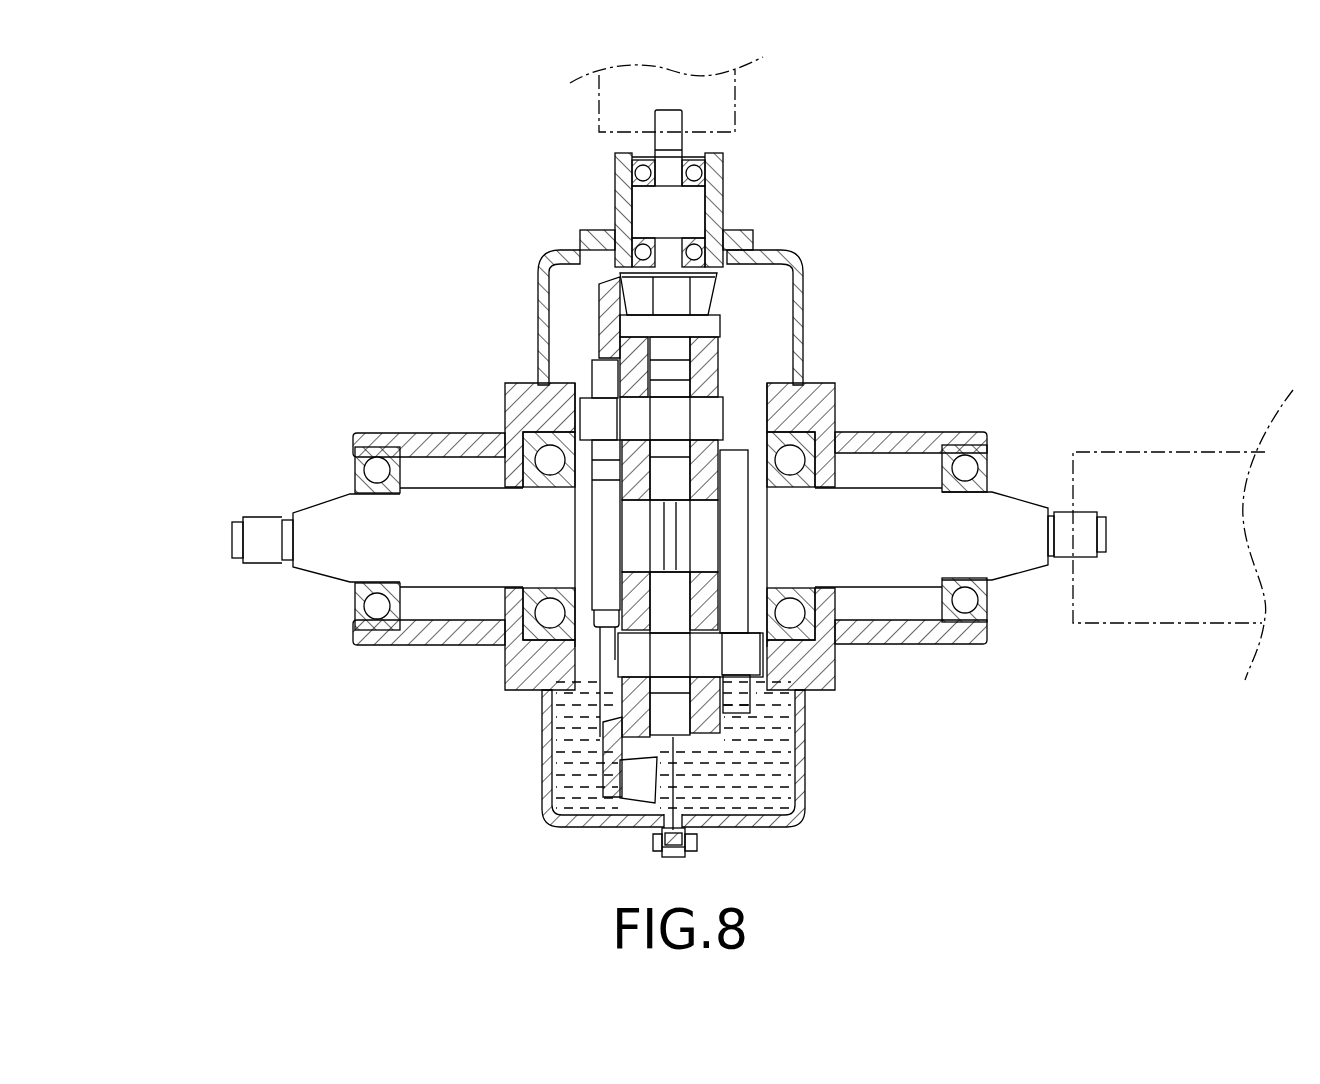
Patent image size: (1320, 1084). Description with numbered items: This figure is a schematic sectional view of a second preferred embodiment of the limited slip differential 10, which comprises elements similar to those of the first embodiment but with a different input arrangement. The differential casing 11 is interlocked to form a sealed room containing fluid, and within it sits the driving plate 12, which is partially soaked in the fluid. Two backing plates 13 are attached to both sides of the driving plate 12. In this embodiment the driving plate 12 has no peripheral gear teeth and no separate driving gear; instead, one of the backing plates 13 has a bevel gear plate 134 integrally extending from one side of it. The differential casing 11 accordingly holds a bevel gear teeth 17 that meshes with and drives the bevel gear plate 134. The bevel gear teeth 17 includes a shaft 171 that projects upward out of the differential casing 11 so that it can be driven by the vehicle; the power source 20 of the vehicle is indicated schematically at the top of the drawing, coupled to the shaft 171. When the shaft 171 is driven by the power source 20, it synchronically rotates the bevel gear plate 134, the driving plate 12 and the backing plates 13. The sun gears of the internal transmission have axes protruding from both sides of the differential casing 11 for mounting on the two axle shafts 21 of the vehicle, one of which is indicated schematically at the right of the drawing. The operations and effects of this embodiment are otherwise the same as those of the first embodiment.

The limited slip differential 10 is at (205, 223).
The differential casing 11 is at (620, 200).
The driving plate 12 is at (682, 345).
The backing plates 13 is at (610, 345).
The bevel gear plate 134 is at (600, 298).
The bevel gear teeth 17 is at (702, 297).
The shaft 171 is at (688, 212).
The power source 20 is at (722, 105).
The axle shafts 21 is at (1127, 482).